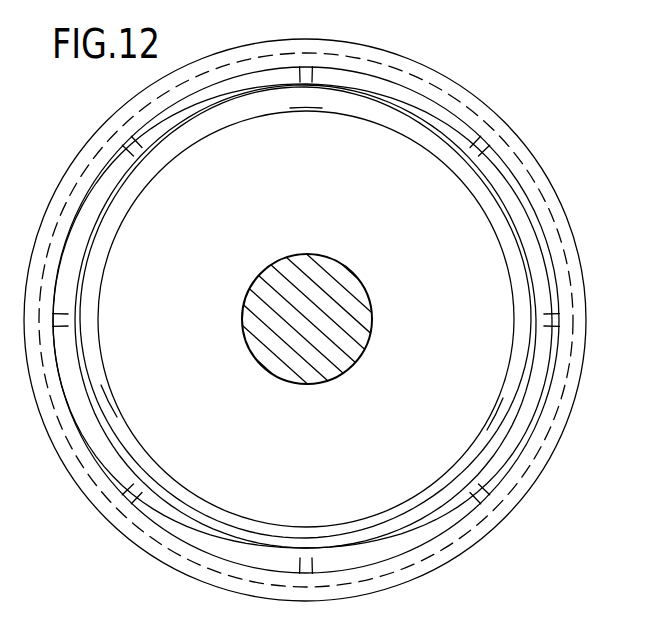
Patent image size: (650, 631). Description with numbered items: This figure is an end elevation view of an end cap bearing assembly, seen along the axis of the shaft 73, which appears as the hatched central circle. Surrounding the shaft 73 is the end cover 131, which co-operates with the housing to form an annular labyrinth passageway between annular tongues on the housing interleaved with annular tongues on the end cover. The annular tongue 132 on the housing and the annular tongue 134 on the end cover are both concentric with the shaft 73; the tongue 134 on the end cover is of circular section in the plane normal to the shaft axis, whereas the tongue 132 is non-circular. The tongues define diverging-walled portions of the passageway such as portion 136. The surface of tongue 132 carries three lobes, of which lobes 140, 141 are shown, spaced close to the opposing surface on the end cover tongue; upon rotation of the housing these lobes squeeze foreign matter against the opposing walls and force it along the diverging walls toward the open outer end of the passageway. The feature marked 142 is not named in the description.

The shaft 73 is at (355, 382).
The end cover 131 is at (480, 337).
The annular tongue 132 is at (400, 115).
The annular tongue 134 is at (115, 240).
The portion of the labyrinth passageway 136 is at (132, 174).
The lobe 140 is at (303, 98).
The lobe 141 is at (117, 417).
The foil end 142 is at (487, 430).